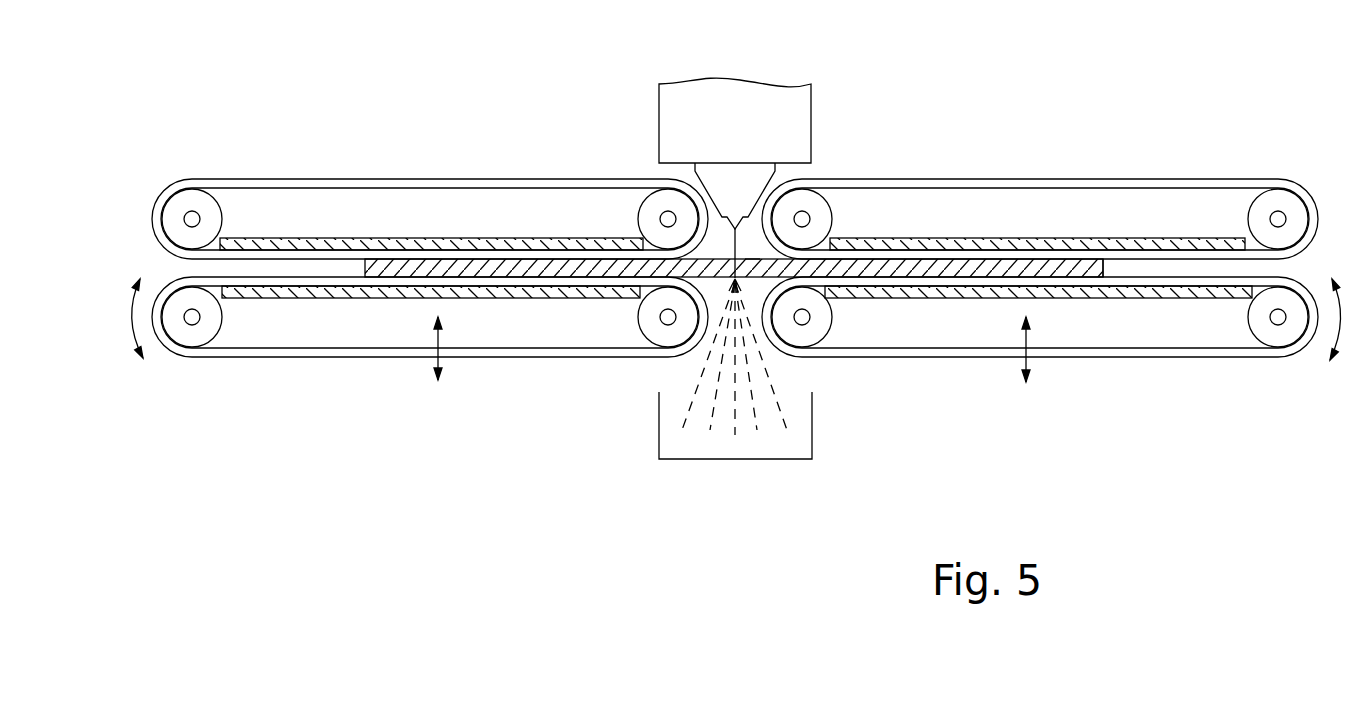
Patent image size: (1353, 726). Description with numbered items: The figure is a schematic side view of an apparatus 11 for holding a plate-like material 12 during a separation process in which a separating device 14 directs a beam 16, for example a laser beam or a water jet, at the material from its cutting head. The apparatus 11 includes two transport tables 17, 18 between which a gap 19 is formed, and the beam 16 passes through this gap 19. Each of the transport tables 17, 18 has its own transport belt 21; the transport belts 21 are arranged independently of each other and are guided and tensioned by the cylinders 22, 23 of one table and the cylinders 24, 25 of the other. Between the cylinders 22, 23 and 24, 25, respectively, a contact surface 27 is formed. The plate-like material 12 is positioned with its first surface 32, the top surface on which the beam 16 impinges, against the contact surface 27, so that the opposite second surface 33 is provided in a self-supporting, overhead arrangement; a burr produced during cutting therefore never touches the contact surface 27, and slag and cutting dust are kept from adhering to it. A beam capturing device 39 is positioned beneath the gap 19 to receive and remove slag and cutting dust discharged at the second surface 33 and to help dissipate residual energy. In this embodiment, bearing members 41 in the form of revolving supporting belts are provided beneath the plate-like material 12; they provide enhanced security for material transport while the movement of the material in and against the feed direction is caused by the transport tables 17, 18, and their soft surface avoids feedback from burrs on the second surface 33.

The apparatus 11 is at (1107, 118).
The plate-like material 12 is at (1093, 278).
The separating device 14 is at (755, 113).
The beam 16 is at (733, 257).
The transport table 17 is at (430, 141).
The transport table 18 is at (1040, 141).
The gap 19 is at (712, 203).
The transport belt 21 is at (307, 186).
The cylinder 22 is at (655, 207).
The cylinder 23 is at (188, 202).
The cylinder 24 is at (752, 258).
The cylinder 25 is at (1283, 207).
The contact surface 27 is at (282, 265).
The first surface 32 is at (813, 207).
The second surface 33 is at (572, 280).
The beam capturing device 39 is at (812, 425).
The bearing member 41 is at (387, 365).